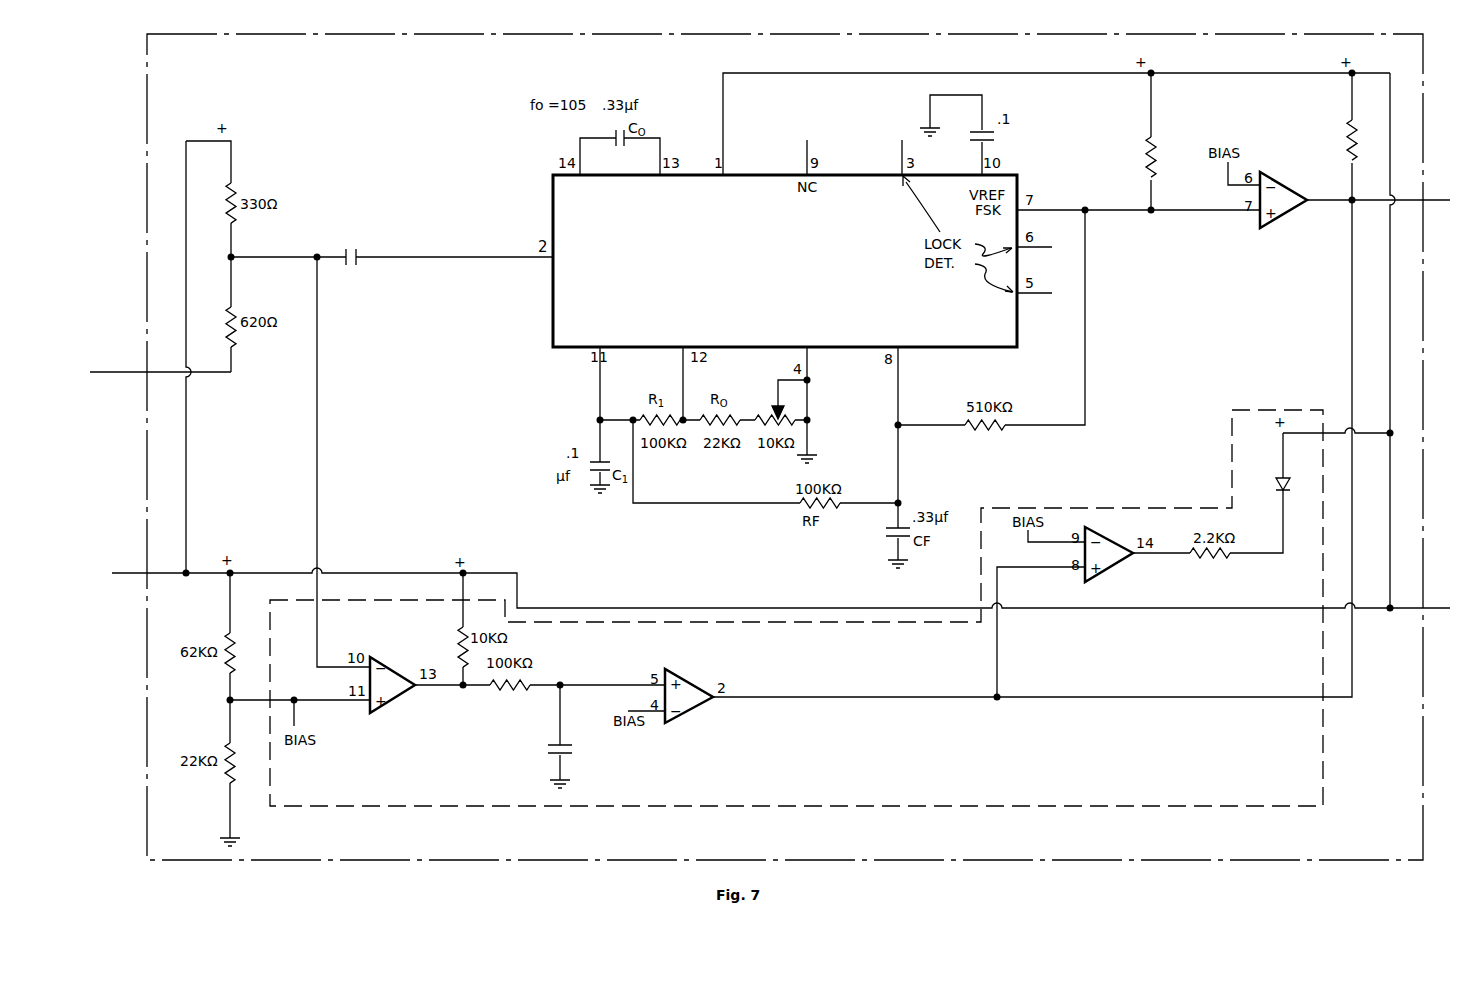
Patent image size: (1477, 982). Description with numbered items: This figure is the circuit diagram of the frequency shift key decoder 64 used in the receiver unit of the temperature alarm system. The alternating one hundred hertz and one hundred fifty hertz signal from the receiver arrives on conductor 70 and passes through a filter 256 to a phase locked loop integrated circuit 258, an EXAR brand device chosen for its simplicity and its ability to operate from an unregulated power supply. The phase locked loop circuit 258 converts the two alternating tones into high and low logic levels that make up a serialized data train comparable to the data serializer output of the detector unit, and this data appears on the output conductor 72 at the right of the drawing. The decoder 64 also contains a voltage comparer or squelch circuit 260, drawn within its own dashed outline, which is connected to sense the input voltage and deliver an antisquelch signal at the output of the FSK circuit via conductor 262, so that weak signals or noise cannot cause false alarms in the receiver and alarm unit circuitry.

The frequency shift key decoder 64 is at (1160, 863).
The conductor 70 is at (135, 350).
The filter 256 is at (357, 266).
The phase locked loop integrated circuit 258 is at (553, 333).
The conductor 262 is at (1352, 294).
The data output line 72 is at (1430, 212).
The voltage comparer or squelch circuit 260 is at (1323, 764).